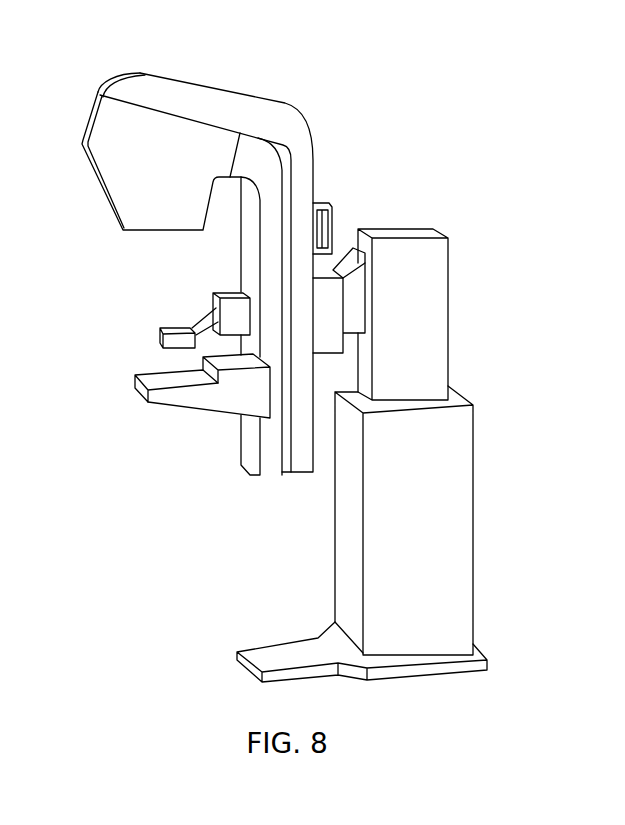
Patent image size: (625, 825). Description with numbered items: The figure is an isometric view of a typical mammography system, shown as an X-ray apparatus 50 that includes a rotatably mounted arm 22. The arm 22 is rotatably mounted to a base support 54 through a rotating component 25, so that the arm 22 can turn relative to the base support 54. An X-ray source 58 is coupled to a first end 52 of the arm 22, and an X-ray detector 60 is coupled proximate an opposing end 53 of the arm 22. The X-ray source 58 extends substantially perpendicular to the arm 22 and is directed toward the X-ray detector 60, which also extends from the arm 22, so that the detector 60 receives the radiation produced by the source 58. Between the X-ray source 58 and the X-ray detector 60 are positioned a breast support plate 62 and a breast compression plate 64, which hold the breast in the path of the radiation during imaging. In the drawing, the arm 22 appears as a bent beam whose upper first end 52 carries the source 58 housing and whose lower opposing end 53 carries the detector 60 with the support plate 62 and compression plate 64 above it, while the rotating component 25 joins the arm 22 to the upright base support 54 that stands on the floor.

The X-ray apparatus 50 is at (97, 52).
The first end 52 is at (306, 122).
The arm 22 is at (315, 181).
The rotating component 25 is at (334, 268).
The X-ray source 58 is at (146, 233).
The breast compression plate 64 is at (173, 327).
The breast support plate 62 is at (133, 378).
The X-ray detector 60 is at (177, 407).
The opposing end 53 is at (246, 478).
The base support 54 is at (474, 521).